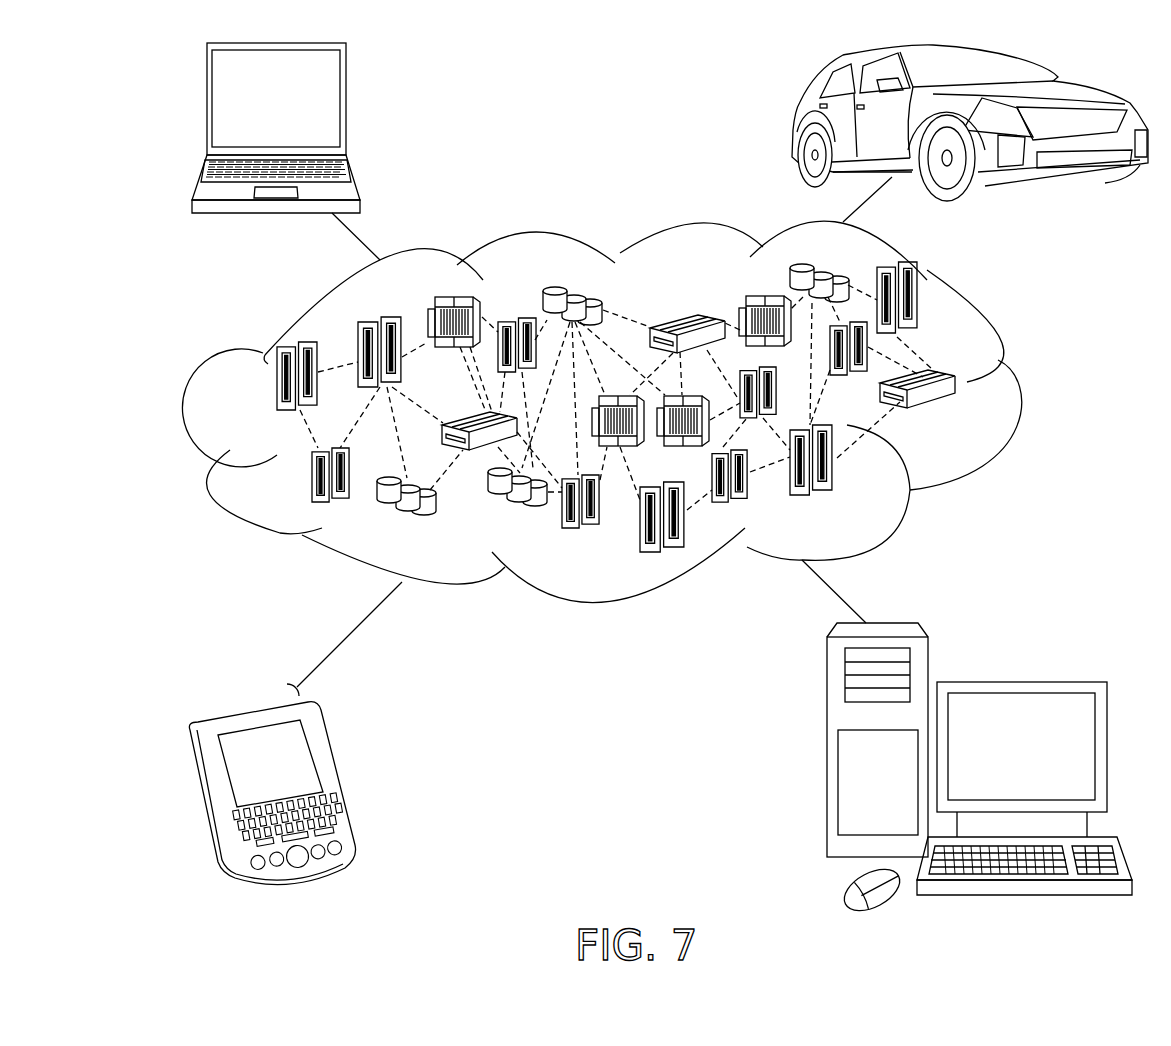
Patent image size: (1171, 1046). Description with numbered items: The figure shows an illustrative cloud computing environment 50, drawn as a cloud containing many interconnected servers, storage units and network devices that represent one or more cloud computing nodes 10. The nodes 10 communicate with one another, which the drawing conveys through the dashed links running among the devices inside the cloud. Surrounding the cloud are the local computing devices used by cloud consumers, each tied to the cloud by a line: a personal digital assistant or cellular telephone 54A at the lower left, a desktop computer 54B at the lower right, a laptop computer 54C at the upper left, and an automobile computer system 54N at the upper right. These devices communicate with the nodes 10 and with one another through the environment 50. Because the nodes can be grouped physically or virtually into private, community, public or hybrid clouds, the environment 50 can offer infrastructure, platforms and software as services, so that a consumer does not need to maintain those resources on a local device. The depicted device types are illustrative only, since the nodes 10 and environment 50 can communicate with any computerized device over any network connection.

The cloud computing node 10 is at (962, 417).
The cloud computing environment 50 is at (1022, 385).
The personal digital assistant (PDA) or cellular telephone 54A is at (335, 778).
The desktop computer 54B is at (1018, 682).
The laptop computer 54C is at (347, 107).
The automobile computer system 54N is at (795, 121).